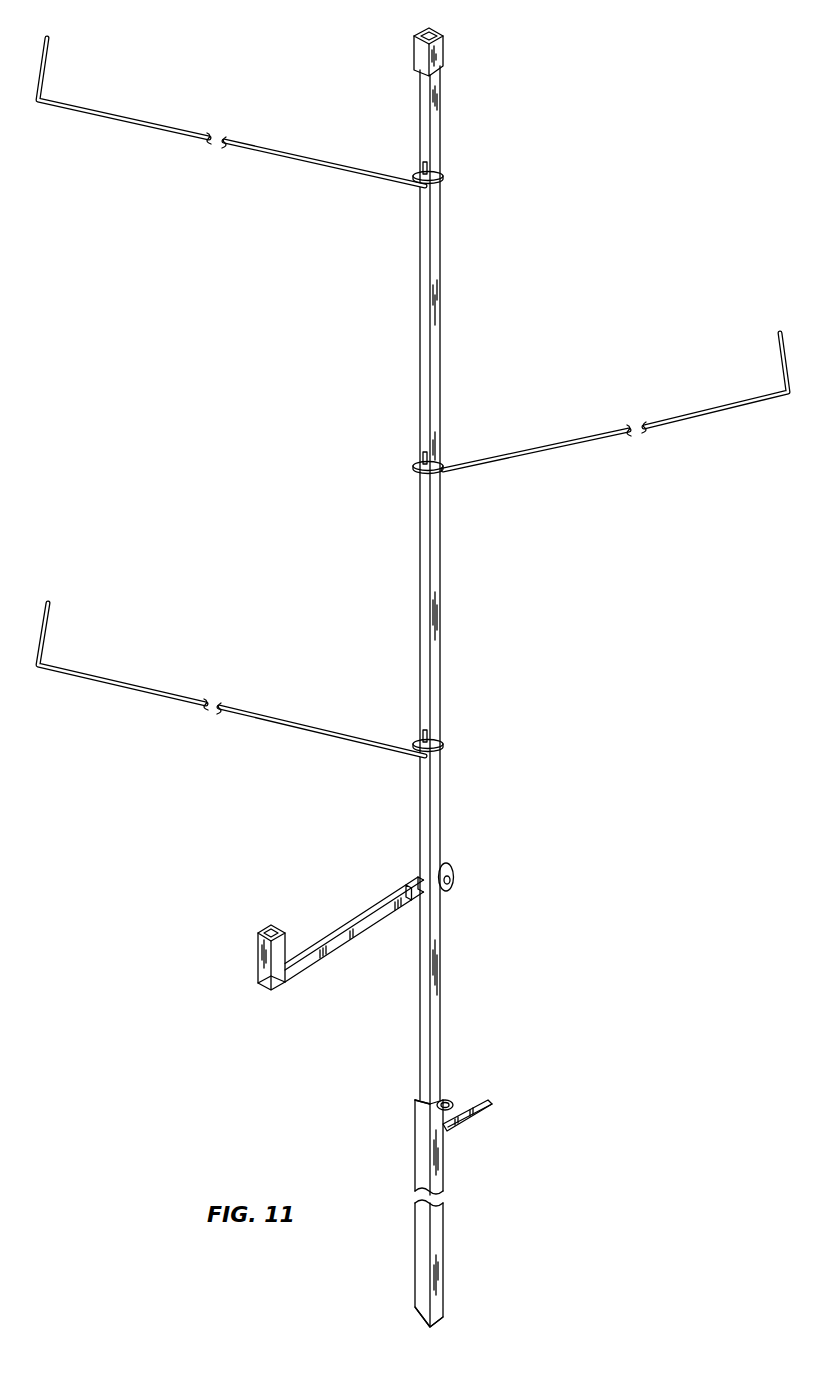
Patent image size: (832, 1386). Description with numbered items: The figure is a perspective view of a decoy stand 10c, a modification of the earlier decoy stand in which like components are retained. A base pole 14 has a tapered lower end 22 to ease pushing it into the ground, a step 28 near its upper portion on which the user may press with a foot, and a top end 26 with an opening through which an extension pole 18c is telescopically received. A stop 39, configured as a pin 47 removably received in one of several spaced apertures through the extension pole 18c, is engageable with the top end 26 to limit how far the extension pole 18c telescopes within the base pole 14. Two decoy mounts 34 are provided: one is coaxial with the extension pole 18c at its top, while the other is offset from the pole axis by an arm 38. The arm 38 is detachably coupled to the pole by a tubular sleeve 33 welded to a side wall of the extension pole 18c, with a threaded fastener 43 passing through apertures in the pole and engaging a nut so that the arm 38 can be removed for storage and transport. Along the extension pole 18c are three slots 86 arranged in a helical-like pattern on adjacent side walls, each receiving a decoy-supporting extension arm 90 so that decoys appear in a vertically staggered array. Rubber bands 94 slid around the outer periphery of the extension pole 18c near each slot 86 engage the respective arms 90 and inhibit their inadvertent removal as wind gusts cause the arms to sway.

The decoy stand 10c is at (633, 219).
The base pole 14 is at (437, 1173).
The extension pole 18c is at (435, 592).
The tapered lower end 22 is at (437, 1325).
The top end 26 is at (428, 1100).
The step 28 is at (483, 1120).
The tubular sleeve 33 is at (413, 880).
The mount 34 is at (440, 60).
The arm 38 is at (345, 925).
The stop 39 is at (460, 1089).
The threaded fastener 43 is at (453, 871).
The pin 47 is at (440, 1100).
The slot 86 is at (425, 172).
The decoy-supporting extension arm 90 is at (275, 156).
The band 94 is at (443, 178).